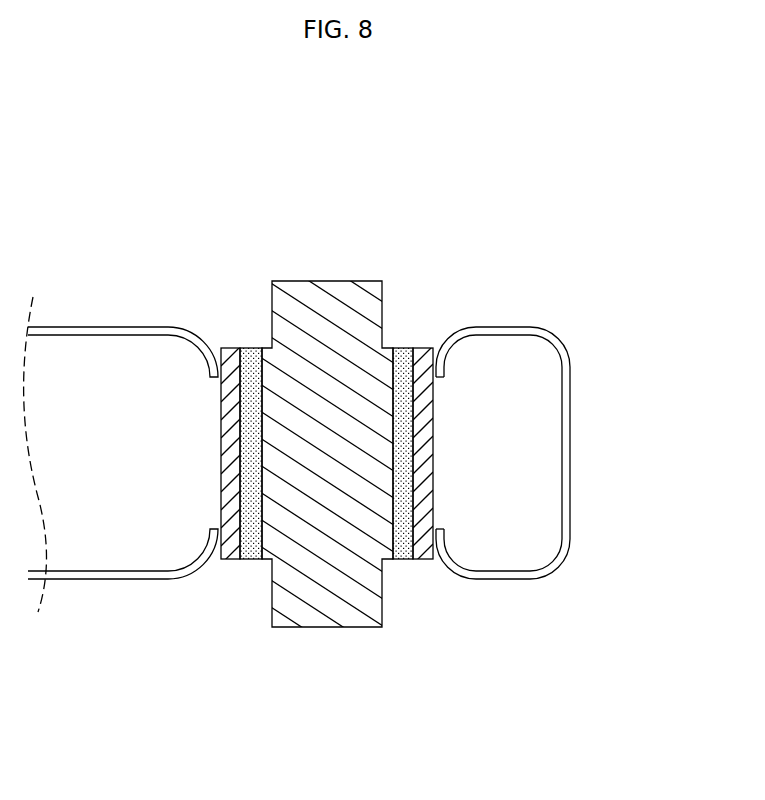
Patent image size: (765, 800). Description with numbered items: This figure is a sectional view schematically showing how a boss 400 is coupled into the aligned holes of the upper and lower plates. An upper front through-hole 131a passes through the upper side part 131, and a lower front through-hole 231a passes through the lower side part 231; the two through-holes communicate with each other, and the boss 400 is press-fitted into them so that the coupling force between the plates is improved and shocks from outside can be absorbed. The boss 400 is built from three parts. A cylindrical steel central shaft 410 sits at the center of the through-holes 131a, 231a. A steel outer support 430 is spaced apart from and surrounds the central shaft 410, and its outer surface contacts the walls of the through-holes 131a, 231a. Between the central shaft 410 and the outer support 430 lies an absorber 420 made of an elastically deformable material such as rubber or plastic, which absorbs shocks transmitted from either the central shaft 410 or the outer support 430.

The boss 400 is at (223, 195).
The central shaft 410 is at (312, 385).
The absorber 420 is at (251, 352).
The outer support 430 is at (232, 352).
The upper side part 131 is at (532, 320).
The upper front through-hole 131a is at (208, 327).
The lower side part 231 is at (499, 587).
The lower front through-hole 231a is at (209, 566).